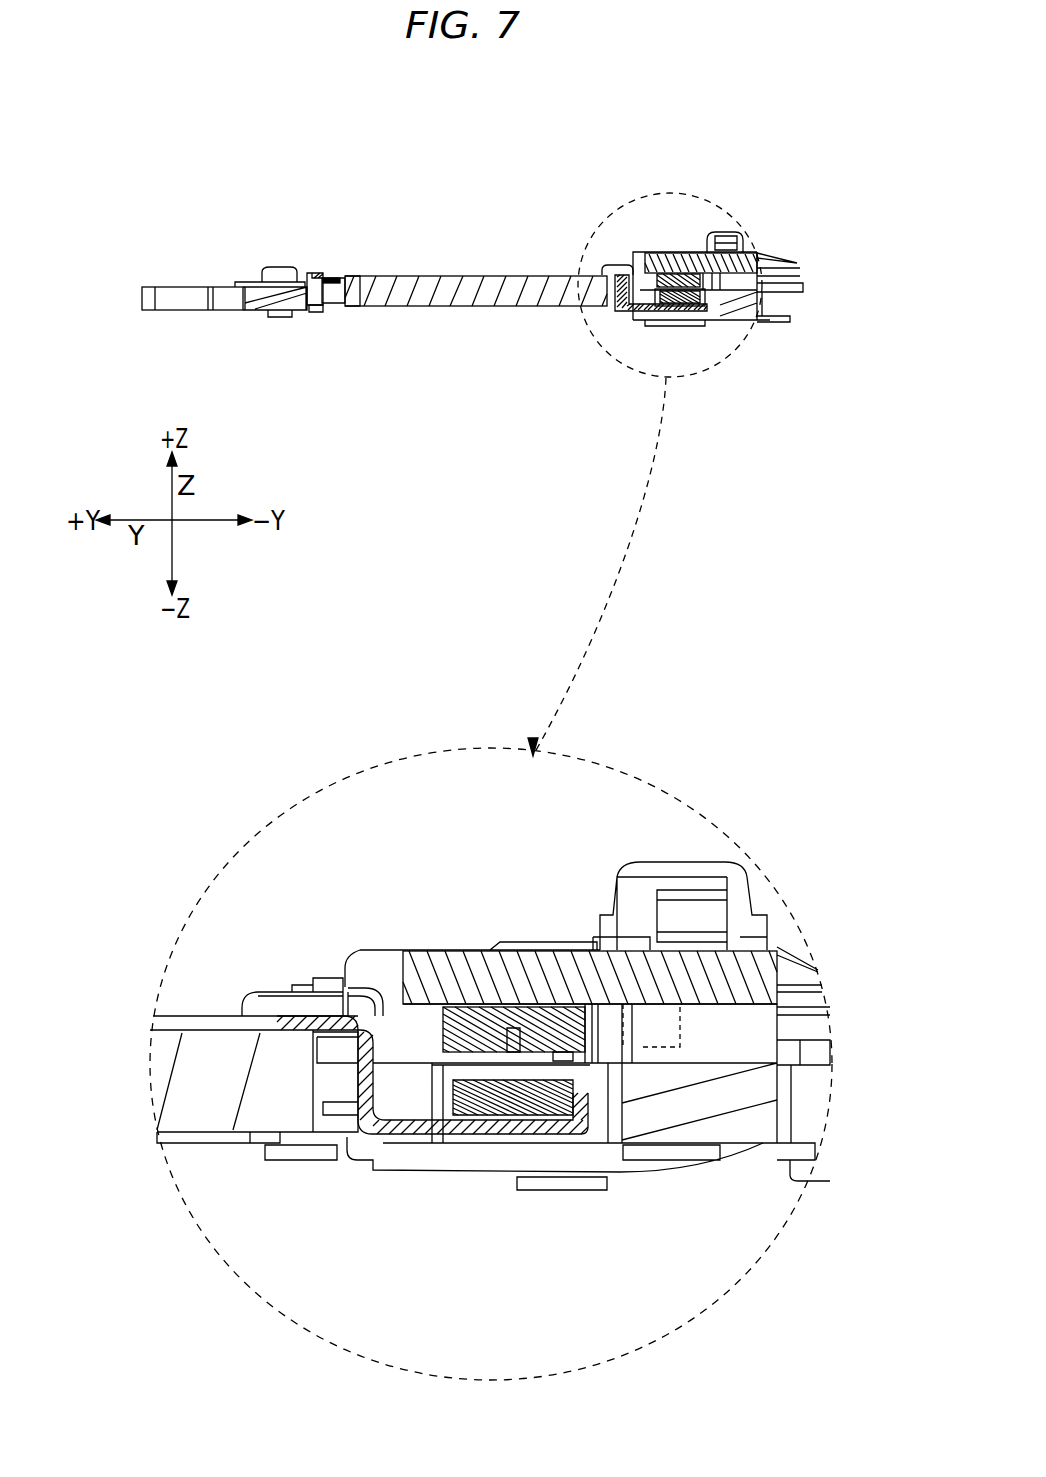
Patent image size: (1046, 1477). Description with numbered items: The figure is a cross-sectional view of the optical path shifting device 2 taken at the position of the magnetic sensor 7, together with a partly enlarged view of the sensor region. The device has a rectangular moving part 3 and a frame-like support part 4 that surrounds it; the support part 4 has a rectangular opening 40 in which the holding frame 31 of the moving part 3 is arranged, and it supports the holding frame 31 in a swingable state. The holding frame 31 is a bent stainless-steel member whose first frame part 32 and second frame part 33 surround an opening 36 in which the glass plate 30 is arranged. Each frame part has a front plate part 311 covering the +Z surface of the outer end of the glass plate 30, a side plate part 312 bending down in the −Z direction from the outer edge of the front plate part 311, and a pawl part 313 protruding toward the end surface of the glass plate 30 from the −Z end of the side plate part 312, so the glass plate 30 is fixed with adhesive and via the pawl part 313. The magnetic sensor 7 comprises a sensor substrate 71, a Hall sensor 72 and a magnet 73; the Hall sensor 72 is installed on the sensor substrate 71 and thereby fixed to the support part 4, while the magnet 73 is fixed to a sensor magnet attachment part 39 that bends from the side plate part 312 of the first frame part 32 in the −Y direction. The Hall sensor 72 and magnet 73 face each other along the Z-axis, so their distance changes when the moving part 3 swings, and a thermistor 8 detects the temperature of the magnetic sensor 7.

The optical path shifting device 2 is at (205, 160).
The moving part 3 is at (463, 162).
The support part 4 is at (258, 290).
The glass plate 30 is at (415, 290).
The holding frame 31 is at (350, 282).
The front plate part 311 is at (340, 278).
The second frame part 33 is at (327, 240).
The side plate part 312 is at (312, 275).
The first frame part 32 is at (416, 721).
The pawl part 313 is at (335, 306).
The opening 40 is at (318, 310).
The opening 36 is at (605, 268).
The sensor magnet attachment part 39 is at (645, 312).
The magnetic sensor 7 is at (652, 246).
The sensor substrate 71 is at (690, 265).
The Hall sensor 72 is at (683, 278).
The magnet 73 is at (672, 320).
The thermistor 8 is at (745, 248).